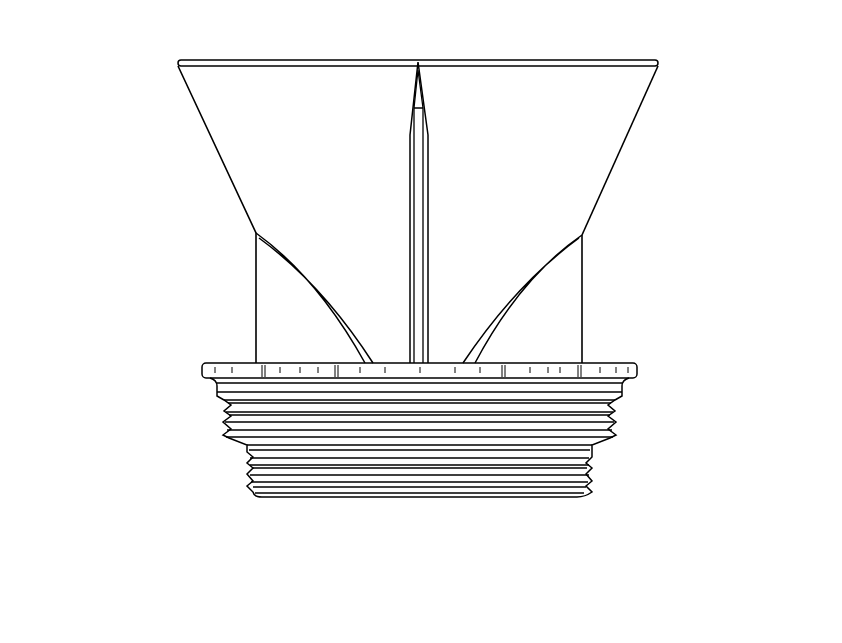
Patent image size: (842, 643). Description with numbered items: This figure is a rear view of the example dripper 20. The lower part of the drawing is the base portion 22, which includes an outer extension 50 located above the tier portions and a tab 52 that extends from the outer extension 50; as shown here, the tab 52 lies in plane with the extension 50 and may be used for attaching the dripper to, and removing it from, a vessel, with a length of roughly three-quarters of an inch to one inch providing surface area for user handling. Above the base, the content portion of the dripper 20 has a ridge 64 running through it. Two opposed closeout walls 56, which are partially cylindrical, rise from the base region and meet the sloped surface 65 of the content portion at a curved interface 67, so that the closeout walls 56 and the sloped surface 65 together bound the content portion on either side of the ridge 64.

The dripper 20 is at (58, 63).
The base portion 22 is at (670, 103).
The sloped surface 65 is at (622, 150).
The ridge 64 is at (423, 240).
The curved interface 67 is at (566, 253).
The closeout walls 56 is at (270, 320).
The outer extension 50 is at (200, 366).
The tab 52 is at (380, 368).